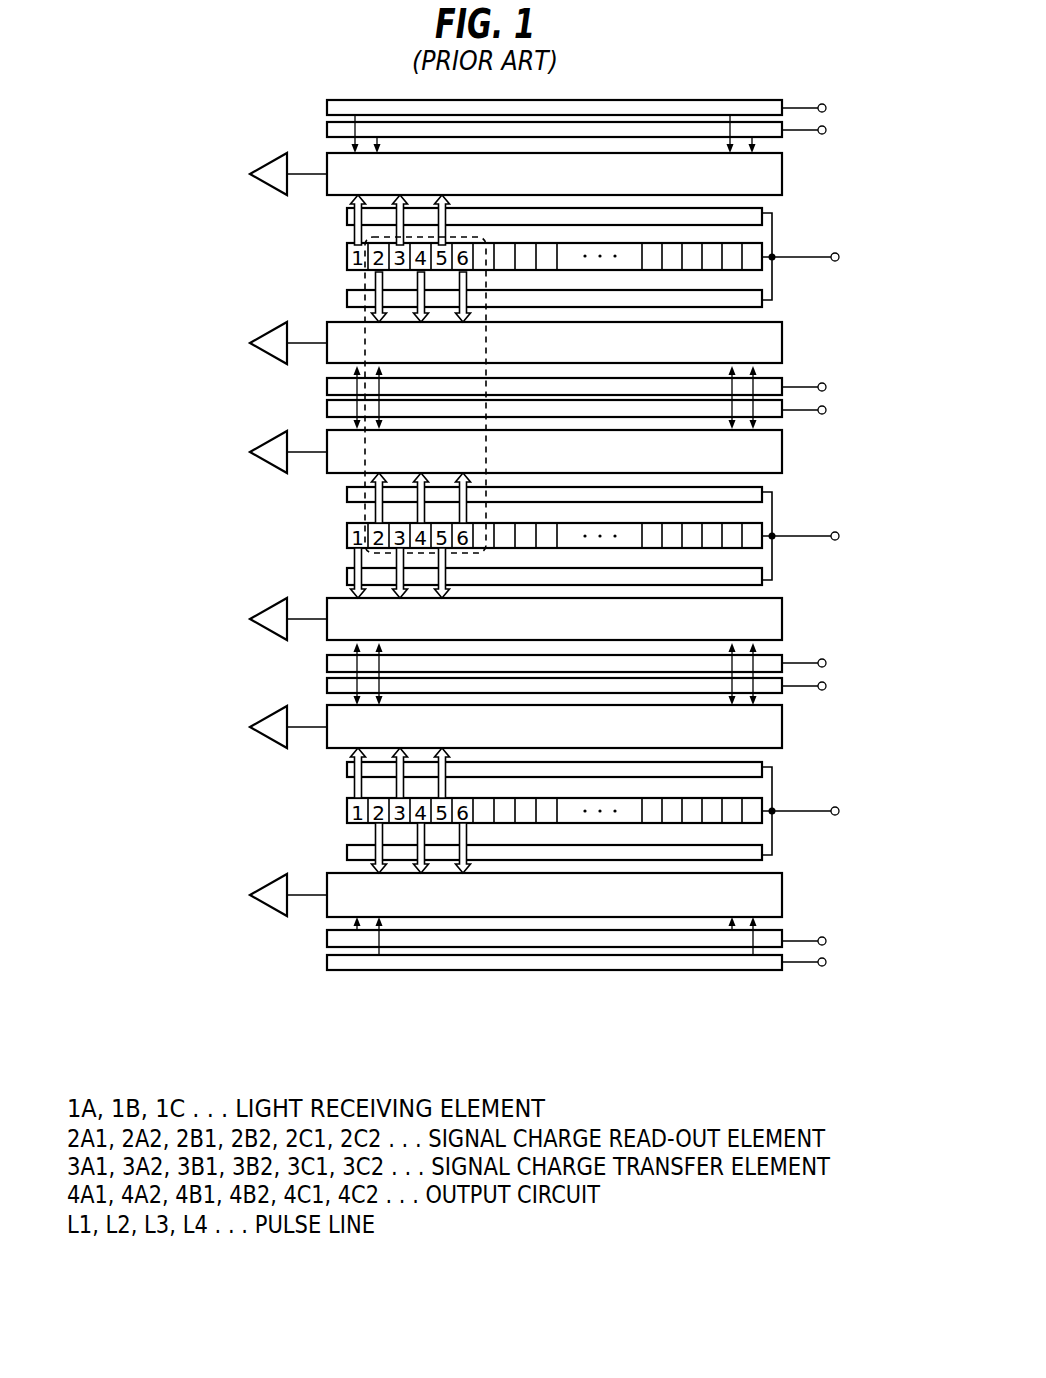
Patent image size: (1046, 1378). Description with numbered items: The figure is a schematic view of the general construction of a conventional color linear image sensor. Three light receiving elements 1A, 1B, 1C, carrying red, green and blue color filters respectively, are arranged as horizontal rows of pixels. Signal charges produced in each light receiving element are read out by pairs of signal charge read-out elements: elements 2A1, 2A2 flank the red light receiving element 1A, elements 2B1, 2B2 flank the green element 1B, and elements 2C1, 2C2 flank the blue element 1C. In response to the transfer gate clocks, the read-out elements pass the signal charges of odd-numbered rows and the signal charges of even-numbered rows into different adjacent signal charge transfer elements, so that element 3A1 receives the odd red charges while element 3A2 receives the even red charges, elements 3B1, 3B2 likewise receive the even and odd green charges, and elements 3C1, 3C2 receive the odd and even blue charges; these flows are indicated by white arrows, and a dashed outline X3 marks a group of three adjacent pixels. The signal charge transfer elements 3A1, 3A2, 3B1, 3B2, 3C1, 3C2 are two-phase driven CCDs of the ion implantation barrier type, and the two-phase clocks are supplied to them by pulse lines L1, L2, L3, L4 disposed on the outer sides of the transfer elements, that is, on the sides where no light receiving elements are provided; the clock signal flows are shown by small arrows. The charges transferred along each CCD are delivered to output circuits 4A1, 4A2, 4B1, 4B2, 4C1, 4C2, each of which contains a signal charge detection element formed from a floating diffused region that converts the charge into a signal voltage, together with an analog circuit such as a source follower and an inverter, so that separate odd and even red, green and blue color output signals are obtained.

The light receiving element 1A is at (760, 243).
The light receiving element 1B is at (760, 523).
The light receiving element 1C is at (760, 798).
The signal charge read-out element 2A1 is at (755, 207).
The signal charge read-out element 2A2 is at (755, 307).
The signal charge read-out element 2B1 is at (755, 486).
The signal charge read-out element 2B2 is at (755, 585).
The signal charge read-out element 2C1 is at (755, 761).
The signal charge read-out element 2C2 is at (755, 861).
The signal charge transfer element 3A1 is at (782, 176).
The signal charge transfer element 3A2 is at (782, 343).
The signal charge transfer element 3B1 is at (782, 453).
The signal charge transfer element 3B2 is at (782, 619).
The signal charge transfer element 3C1 is at (782, 728).
The signal charge transfer element 3C2 is at (782, 895).
The output circuit 4A1 is at (267, 168).
The output circuit 4A2 is at (267, 337).
The output circuit 4B1 is at (267, 446).
The output circuit 4B2 is at (267, 613).
The output circuit 4C1 is at (267, 721).
The output circuit 4C2 is at (267, 889).
The pulse line L1 is at (617, 124).
The pulse line L2 is at (617, 397).
The pulse line L3 is at (617, 674).
The pulse line L4 is at (617, 947).
The three-pixel group X3 is at (362, 338).